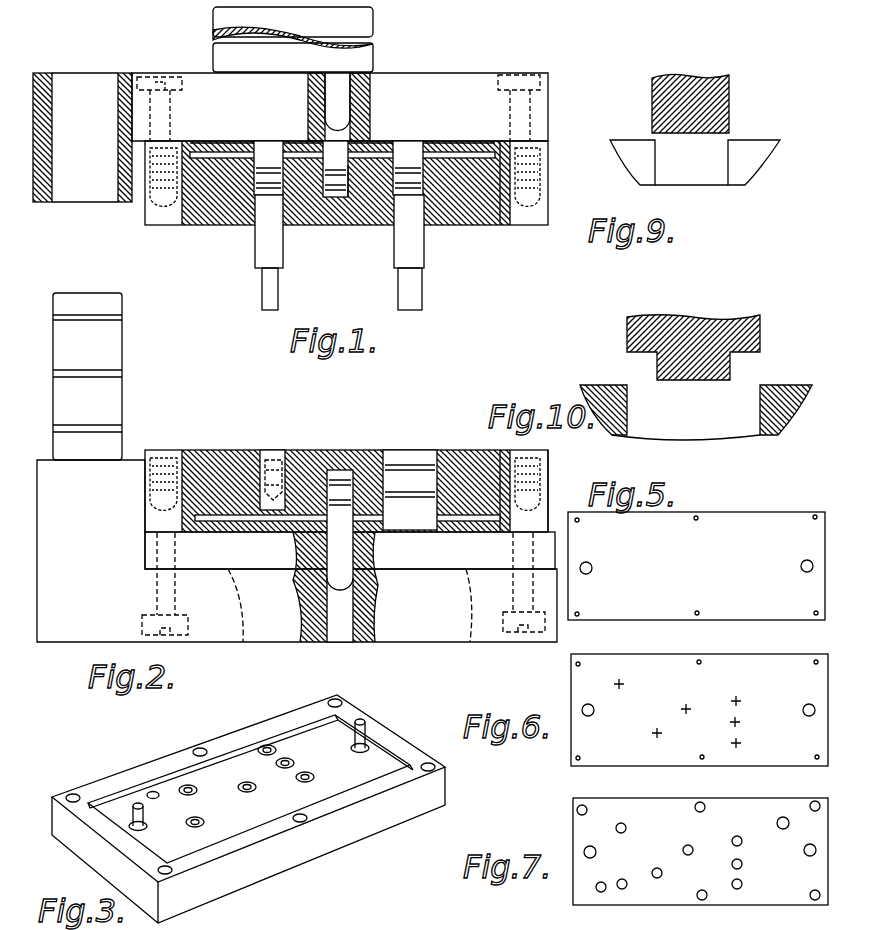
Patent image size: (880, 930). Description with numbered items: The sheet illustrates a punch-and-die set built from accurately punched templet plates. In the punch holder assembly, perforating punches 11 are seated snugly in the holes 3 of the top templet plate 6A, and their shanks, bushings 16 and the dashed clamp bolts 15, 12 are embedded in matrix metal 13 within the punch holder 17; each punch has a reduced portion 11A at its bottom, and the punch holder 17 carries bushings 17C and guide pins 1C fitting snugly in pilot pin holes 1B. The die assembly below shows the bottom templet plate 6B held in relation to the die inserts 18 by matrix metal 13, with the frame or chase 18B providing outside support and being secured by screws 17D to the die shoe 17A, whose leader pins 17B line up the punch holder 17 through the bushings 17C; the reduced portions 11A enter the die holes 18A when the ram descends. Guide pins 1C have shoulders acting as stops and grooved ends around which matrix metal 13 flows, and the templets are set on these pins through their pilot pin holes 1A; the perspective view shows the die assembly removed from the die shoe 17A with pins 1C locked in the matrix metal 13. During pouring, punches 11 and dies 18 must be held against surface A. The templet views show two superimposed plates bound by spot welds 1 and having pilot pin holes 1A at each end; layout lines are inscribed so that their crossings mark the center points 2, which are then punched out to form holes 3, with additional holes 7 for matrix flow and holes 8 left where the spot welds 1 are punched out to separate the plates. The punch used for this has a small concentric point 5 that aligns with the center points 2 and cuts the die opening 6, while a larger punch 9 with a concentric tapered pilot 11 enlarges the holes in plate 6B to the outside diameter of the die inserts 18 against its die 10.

In FIG. 5, the spot welds 1 is at (697, 615).
In FIG. 6, the spot welds 1 is at (815, 663).
In FIG. 1, the pilot pin holes 1A is at (392, 196).
In FIG. 5, the pilot pin holes 1A is at (592, 564).
In FIG. 6, the pilot pin holes 1A is at (698, 710).
In FIG. 7, the pilot pin holes 1A is at (596, 850).
In FIG. 1, the pilot pin holes 1B is at (342, 90).
In FIG. 1, the guide pins 1C is at (338, 197).
In FIG. 2, the guide pins 1C is at (342, 470).
In FIG. 3, the guide pins 1C is at (134, 806).
In FIG. 6, the center points 2 is at (623, 684).
In FIG. 7, the holes 3 is at (626, 826).
In FIG. 9, the small point 5 is at (690, 141).
In FIG. 9, the die opening 6 is at (728, 180).
In FIG. 1, the top templet plate 6A is at (228, 154).
In FIG. 7, the top templet plate 6A is at (575, 884).
In FIG. 2, the bottom templet plate 6B is at (222, 515).
In FIG. 7, the additional holes 7 is at (781, 817).
In FIG. 7, the holes 8 is at (587, 810).
In FIG. 10, the punch 9 is at (762, 322).
In FIG. 10, the die 10 is at (752, 396).
In FIG. 1, the perforating punches 11 is at (283, 253).
In FIG. 10, the perforating punches 11 is at (732, 372).
In FIG. 1, the reduced portion 11A is at (278, 300).
In FIG. 1, the clamp bolt 12 is at (530, 218).
In FIG. 1, the matrix metal 13 is at (483, 218).
In FIG. 2, the matrix metal 13 is at (460, 452).
In FIG. 3, the matrix metal 13 is at (170, 785).
In FIG. 1, the clamp bolt 15 is at (190, 222).
In FIG. 1, the punch bushings 16 is at (262, 148).
In FIG. 1, the punch holder 17 is at (437, 88).
In FIG. 2, the die shoe 17A is at (122, 468).
In FIG. 2, the leader pins 17B is at (122, 346).
In FIG. 1, the bushings 17C is at (52, 82).
In FIG. 2, the screws 17D is at (157, 601).
In FIG. 2, the die inserts 18 is at (294, 453).
In FIG. 3, the die inserts 18 is at (200, 818).
In FIG. 2, the die holes 18A is at (270, 452).
In FIG. 2, the frame or chase 18B is at (548, 462).
In FIG. 3, the frame or chase 18B is at (248, 812).
In FIG. 1, the surface A is at (204, 143).
In FIG. 9, the surface A is at (652, 104).